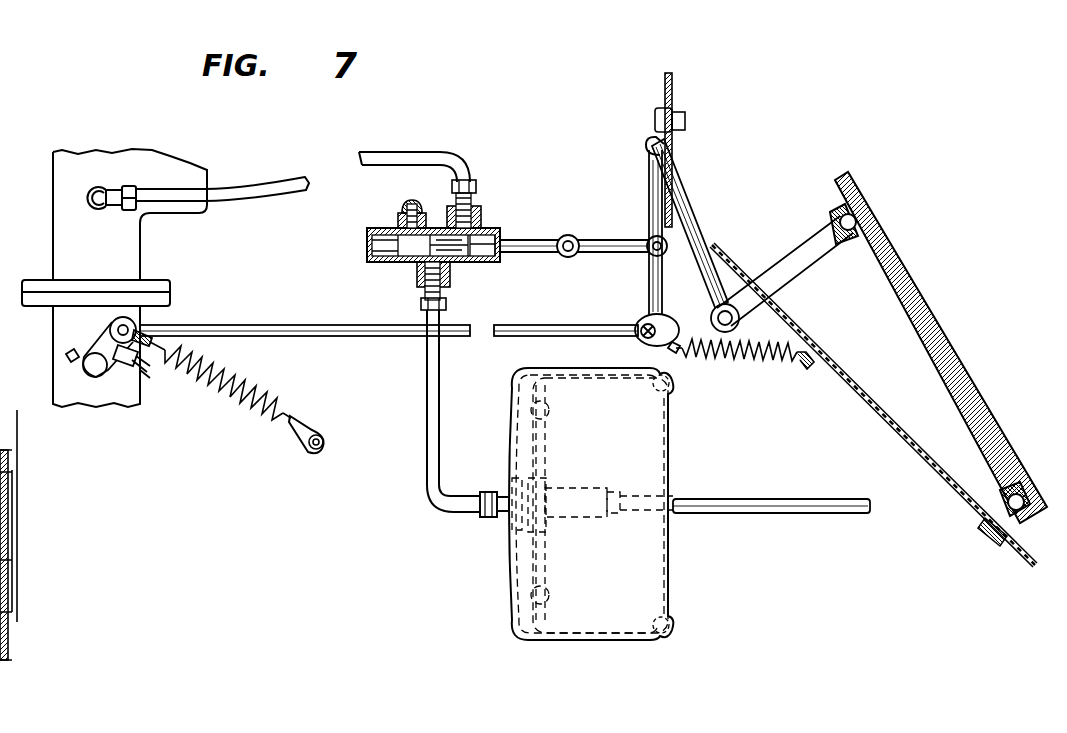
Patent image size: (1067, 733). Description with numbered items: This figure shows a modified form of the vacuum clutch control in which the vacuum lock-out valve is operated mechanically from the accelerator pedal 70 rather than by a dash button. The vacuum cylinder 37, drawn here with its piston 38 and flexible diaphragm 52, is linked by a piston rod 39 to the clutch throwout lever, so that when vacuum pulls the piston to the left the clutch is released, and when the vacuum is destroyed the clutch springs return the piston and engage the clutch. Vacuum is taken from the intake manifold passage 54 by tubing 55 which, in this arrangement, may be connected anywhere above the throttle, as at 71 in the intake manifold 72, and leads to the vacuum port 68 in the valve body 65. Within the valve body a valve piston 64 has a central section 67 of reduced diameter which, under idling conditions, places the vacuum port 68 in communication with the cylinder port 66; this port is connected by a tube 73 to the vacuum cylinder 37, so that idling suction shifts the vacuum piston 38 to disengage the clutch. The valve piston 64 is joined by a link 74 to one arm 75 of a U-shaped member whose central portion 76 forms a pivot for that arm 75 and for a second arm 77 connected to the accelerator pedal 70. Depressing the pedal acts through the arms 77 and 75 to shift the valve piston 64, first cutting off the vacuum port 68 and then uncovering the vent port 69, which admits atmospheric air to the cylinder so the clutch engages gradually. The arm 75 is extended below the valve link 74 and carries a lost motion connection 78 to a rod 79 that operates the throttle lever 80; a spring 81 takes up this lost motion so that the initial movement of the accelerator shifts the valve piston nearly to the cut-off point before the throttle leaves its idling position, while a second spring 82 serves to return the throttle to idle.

The vacuum cylinder 37 is at (560, 372).
The piston 38 is at (546, 447).
The piston rod 39 is at (750, 514).
The flexible diaphragm 52 is at (598, 382).
The intake manifold passage 54 is at (64, 313).
The tubing 55 is at (290, 174).
The valve piston 64 is at (490, 256).
The valve body 65 is at (380, 258).
The cylinder port 66 is at (424, 270).
The central section of reduced diameter 67 is at (458, 258).
The vacuum port 68 is at (482, 222).
The vent port 69 is at (398, 222).
The accelerator pedal 70 is at (938, 338).
The connection point in intake manifold 71 is at (100, 190).
The intake manifold 72 is at (63, 190).
The tube 73 is at (432, 410).
The link 74 is at (592, 238).
The arm 75 is at (650, 200).
The central portion 76 is at (656, 136).
The second arm 77 is at (692, 232).
The lost motion connection 78 is at (670, 326).
The rod 79 is at (535, 326).
The throttle lever 80 is at (112, 336).
The spring 81 is at (746, 358).
The second spring 82 is at (236, 402).